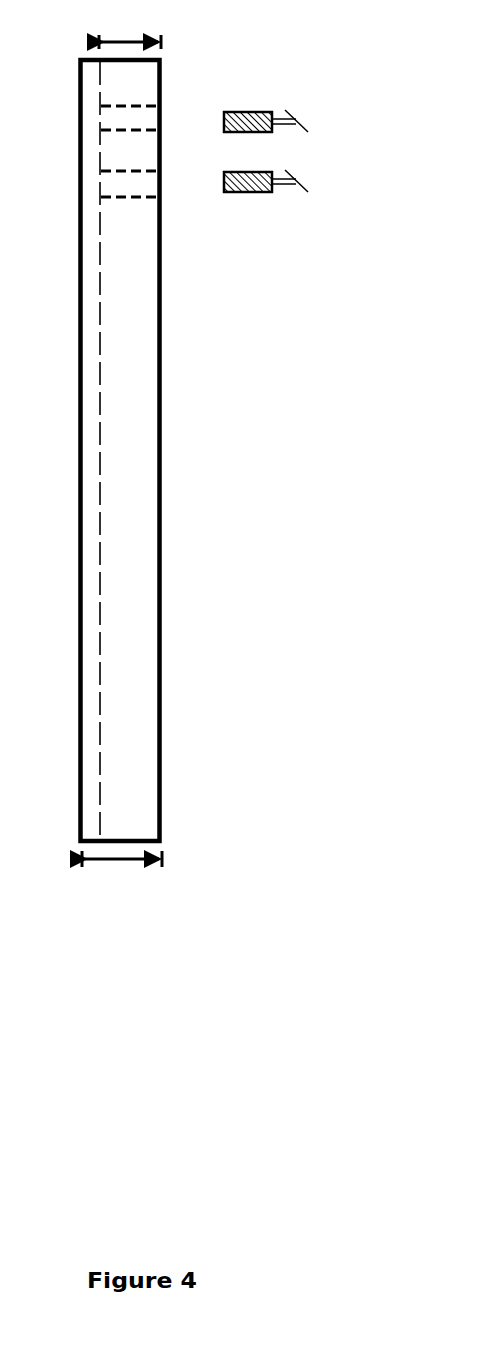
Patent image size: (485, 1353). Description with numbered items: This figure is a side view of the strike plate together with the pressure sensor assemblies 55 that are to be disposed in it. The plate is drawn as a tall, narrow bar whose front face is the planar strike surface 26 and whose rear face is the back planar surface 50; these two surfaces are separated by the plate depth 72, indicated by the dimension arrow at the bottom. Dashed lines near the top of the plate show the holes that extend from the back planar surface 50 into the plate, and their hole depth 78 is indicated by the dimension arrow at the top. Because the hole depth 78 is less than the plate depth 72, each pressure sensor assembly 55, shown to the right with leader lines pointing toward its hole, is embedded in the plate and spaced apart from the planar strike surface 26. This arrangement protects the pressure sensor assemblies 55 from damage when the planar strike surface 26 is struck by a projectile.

The planar strike surface 26 is at (93, 450).
The back planar surface 50 is at (158, 450).
The pressure sensor assemblies 55 is at (320, 137).
The plate depth 72 is at (122, 875).
The hole depth 78 is at (130, 27).